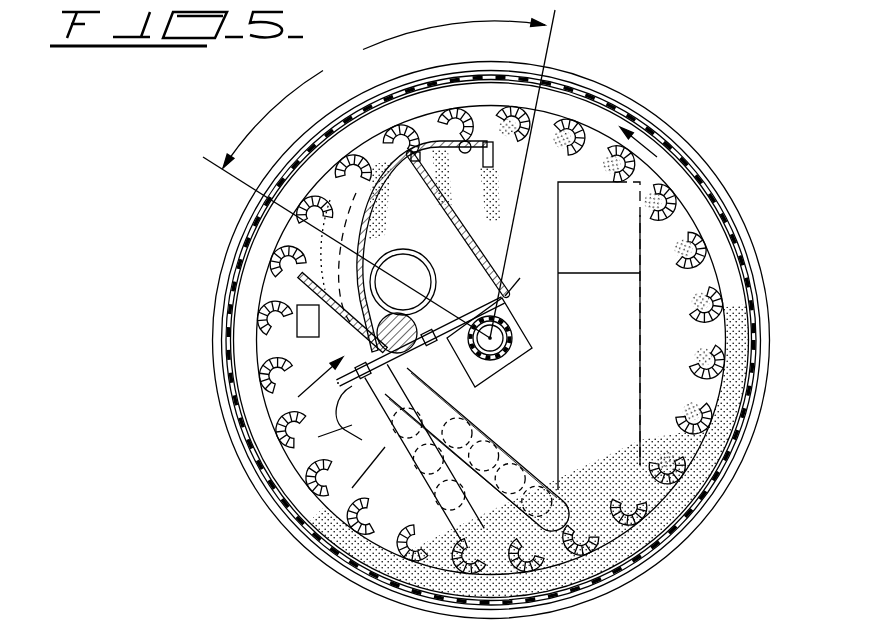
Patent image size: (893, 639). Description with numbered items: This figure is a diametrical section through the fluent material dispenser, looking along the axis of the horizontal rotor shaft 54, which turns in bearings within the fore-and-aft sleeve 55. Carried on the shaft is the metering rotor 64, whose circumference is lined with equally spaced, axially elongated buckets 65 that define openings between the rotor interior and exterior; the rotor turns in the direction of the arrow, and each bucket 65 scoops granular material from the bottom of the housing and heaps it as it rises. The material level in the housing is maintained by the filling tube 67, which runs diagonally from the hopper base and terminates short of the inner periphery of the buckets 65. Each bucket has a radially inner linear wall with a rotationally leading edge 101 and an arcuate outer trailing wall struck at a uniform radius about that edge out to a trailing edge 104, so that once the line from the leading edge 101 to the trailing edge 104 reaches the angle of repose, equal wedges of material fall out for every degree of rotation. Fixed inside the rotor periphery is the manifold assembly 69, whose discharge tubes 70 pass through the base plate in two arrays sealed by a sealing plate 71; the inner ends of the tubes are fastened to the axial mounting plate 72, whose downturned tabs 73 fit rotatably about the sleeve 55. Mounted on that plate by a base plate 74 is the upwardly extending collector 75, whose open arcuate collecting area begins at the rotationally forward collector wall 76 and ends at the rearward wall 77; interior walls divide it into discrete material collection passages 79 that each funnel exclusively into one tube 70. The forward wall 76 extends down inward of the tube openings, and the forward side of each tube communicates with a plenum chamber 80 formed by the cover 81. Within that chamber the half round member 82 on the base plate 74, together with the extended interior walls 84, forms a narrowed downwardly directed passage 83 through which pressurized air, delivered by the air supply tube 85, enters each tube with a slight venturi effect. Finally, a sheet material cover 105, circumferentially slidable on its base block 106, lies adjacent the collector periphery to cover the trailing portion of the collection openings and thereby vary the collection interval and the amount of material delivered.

The rotor shaft 54 is at (512, 340).
The sleeve 55 is at (502, 330).
The metering rotor 64 is at (690, 222).
The buckets 65 is at (570, 130).
The filling tube 67 is at (640, 362).
The manifold assembly 69 is at (355, 478).
The discharge tubes 70 is at (440, 398).
The sealing plate 71 is at (470, 410).
The mounting plate 72 is at (345, 432).
The downturned tabs 73 is at (508, 376).
The base plate 74 is at (407, 358).
The collector 75 is at (306, 385).
The forward collector wall 76 is at (443, 200).
The rearward wall 77 is at (345, 345).
The material collection passages 79 is at (350, 314).
The plenum chamber 80 is at (477, 279).
The cover 81 is at (502, 322).
The half round member 82 is at (452, 325).
The passage 83 is at (305, 308).
The extended interior walls 84 is at (328, 250).
The air supply tube 85 is at (432, 256).
The leading edge 101 is at (495, 125).
The trailing edge 104 is at (500, 108).
The cover 105 is at (325, 190).
The base block 106 is at (493, 158).